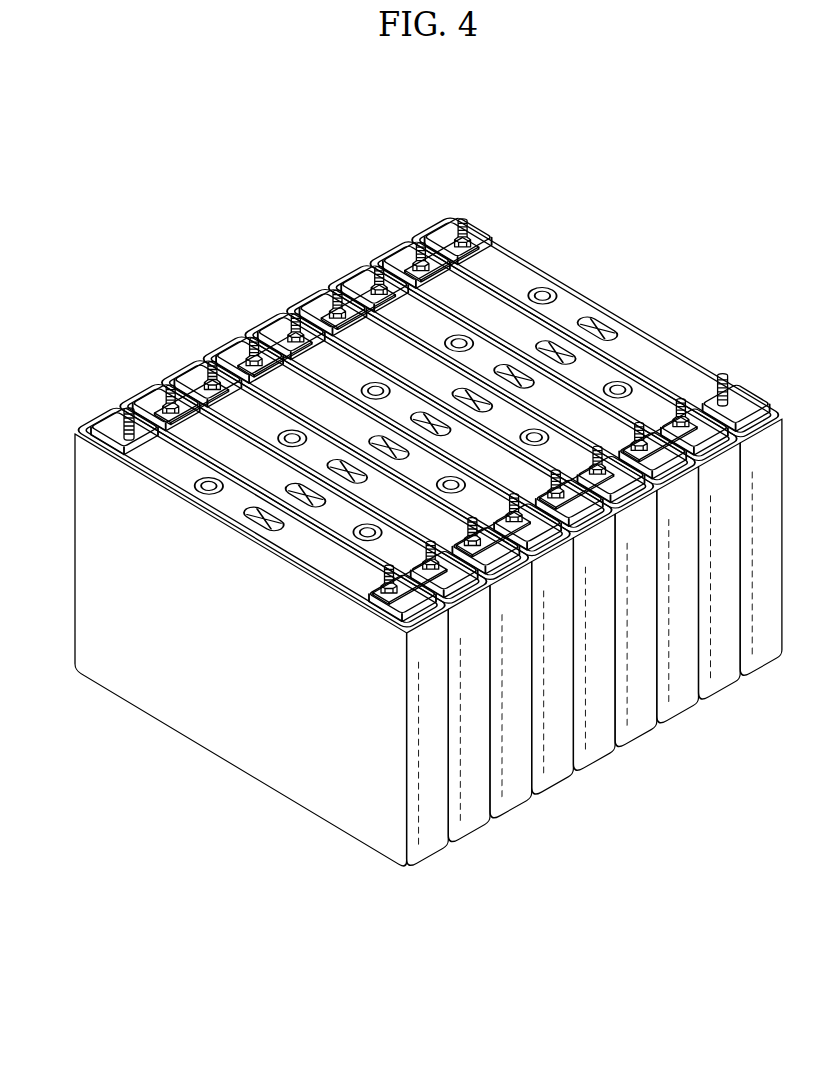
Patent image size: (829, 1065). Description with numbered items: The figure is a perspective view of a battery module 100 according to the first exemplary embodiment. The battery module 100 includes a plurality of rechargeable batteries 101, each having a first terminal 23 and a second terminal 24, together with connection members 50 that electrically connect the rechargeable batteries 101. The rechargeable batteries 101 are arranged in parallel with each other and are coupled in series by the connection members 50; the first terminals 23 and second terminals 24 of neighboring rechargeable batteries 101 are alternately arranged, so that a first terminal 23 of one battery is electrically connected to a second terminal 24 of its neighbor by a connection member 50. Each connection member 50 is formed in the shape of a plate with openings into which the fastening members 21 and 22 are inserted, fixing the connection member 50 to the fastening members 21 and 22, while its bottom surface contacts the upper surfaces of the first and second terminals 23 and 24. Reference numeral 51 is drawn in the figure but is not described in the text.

The battery module 100 is at (347, 165).
The rechargeable battery 101 is at (492, 843).
The fastening member 21 is at (169, 386).
The fastening member 22 is at (127, 416).
The first terminal 23 is at (146, 397).
The second terminal 24 is at (103, 424).
The connection member 50 is at (197, 398).
The nut 51 is at (216, 364).